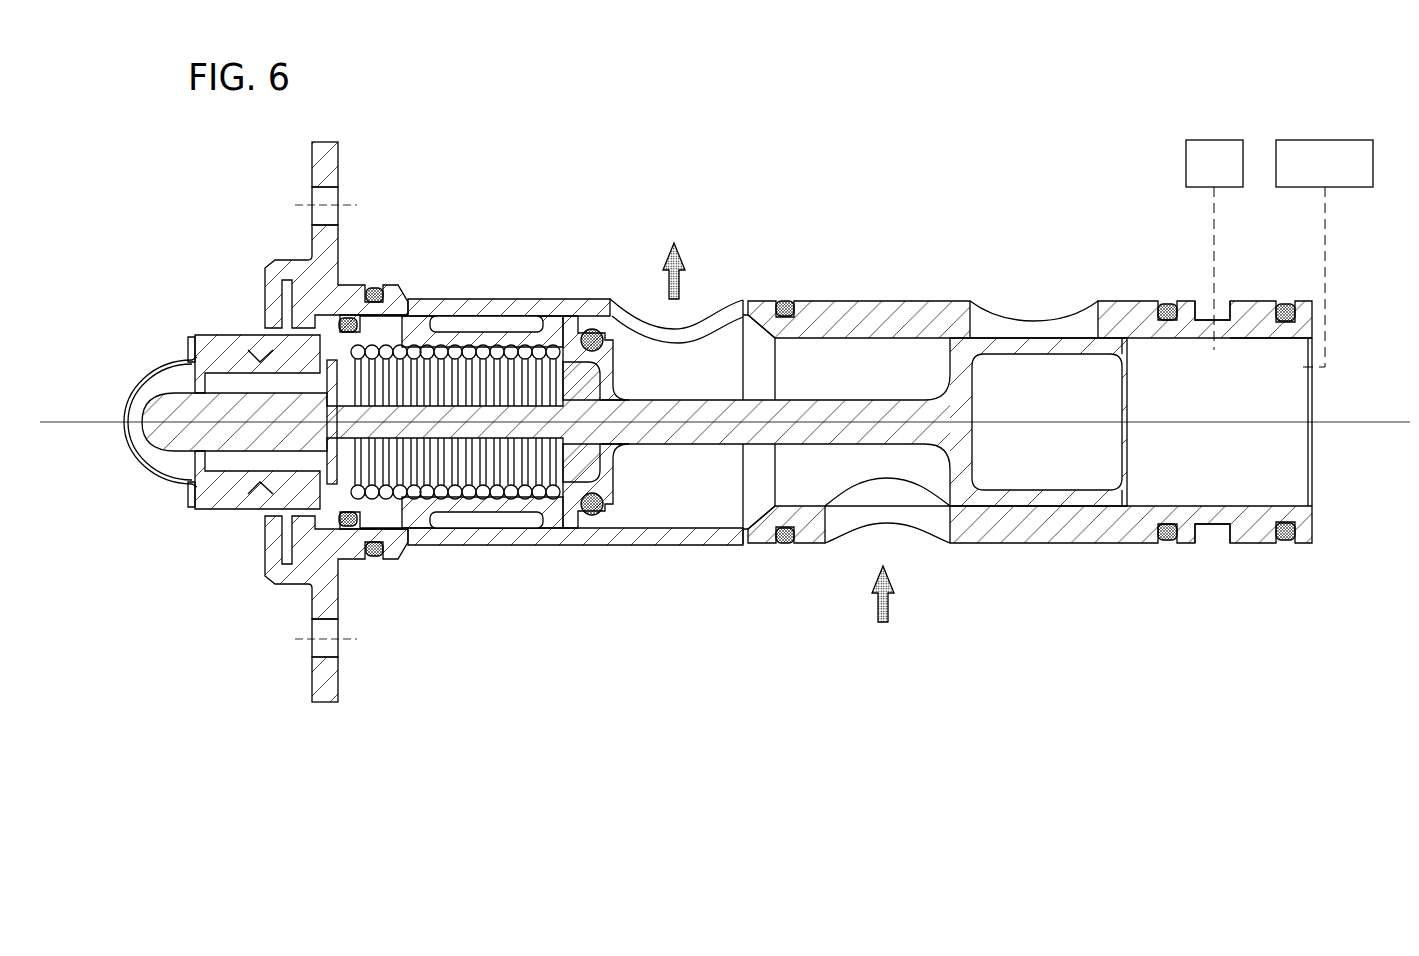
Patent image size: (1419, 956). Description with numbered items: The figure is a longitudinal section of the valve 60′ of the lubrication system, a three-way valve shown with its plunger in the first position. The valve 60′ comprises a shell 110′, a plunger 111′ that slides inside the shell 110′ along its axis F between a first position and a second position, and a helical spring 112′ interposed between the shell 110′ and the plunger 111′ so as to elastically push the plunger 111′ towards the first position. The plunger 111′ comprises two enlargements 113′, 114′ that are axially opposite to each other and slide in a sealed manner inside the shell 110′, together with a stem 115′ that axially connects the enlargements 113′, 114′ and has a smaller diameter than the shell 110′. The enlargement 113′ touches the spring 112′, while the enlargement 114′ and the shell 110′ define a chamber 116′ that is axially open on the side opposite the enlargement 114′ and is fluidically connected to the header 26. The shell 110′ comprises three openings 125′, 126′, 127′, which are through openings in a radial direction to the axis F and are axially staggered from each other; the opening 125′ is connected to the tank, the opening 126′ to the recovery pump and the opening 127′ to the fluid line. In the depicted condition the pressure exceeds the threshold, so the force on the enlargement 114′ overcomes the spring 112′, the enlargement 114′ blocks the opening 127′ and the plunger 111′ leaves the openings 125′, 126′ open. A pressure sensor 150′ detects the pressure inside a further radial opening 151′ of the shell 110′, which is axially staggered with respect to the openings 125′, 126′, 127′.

The valve 60′ is at (613, 151).
The shell 110′ is at (880, 318).
The plunger 111′ is at (522, 413).
The spring 112′ is at (478, 494).
The enlargement 113′ is at (406, 330).
The enlargement 114′ is at (1066, 352).
The stem 115′ is at (690, 421).
The chamber 116′ is at (1252, 347).
The opening 125′ is at (722, 311).
The opening 126′ is at (828, 522).
The opening 127′ is at (980, 320).
The pressure sensor 150′ is at (1238, 112).
The opening 151′ is at (1200, 329).
The header 26 is at (1312, 140).
The axis F is at (1335, 470).